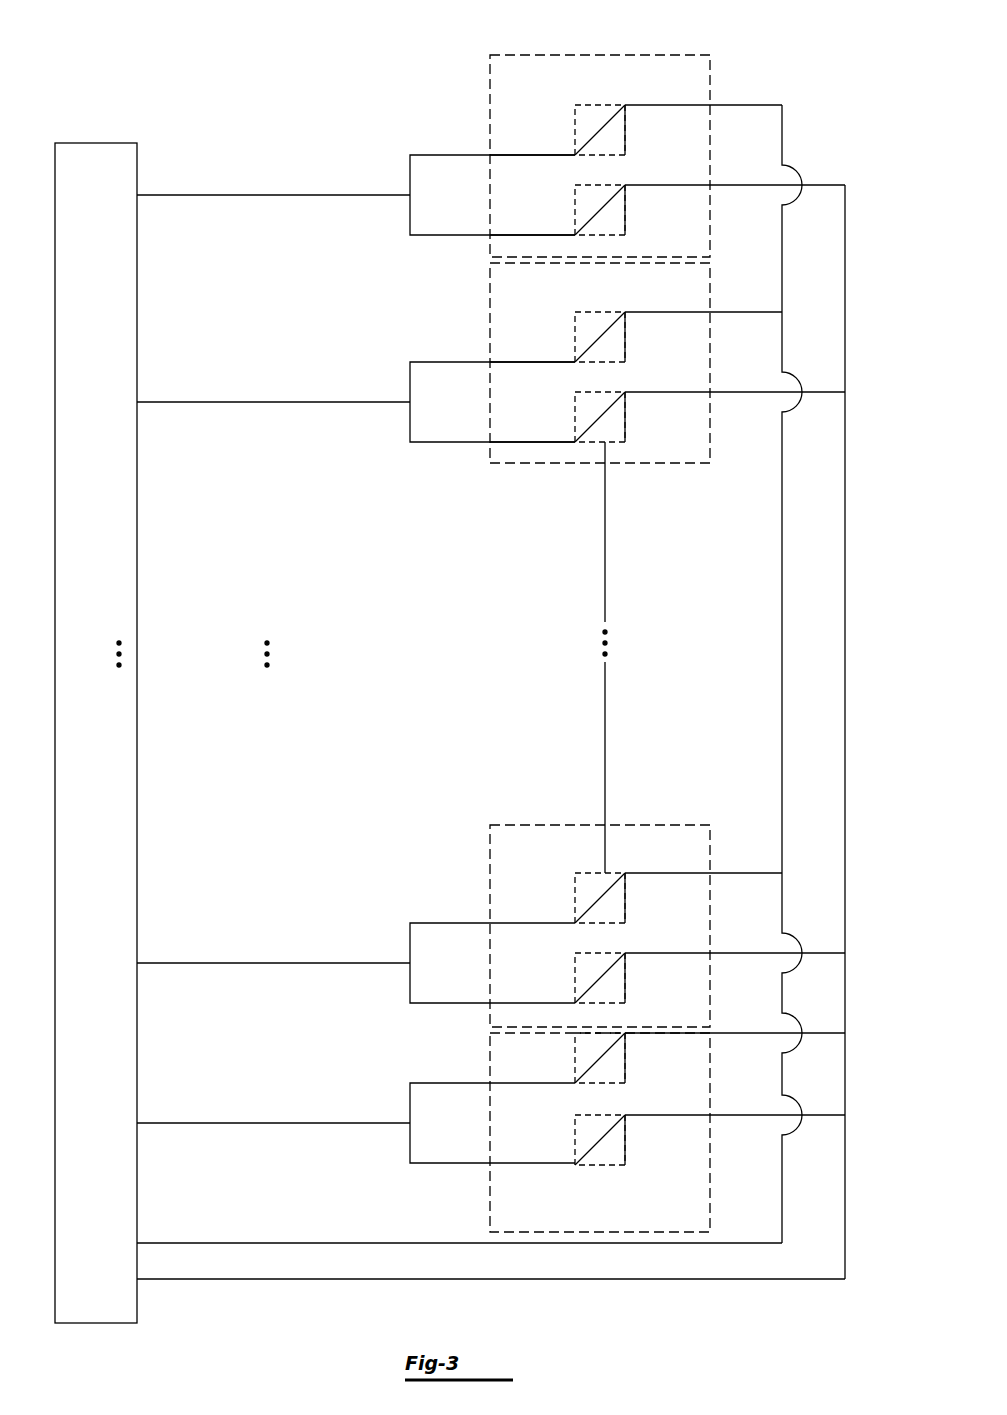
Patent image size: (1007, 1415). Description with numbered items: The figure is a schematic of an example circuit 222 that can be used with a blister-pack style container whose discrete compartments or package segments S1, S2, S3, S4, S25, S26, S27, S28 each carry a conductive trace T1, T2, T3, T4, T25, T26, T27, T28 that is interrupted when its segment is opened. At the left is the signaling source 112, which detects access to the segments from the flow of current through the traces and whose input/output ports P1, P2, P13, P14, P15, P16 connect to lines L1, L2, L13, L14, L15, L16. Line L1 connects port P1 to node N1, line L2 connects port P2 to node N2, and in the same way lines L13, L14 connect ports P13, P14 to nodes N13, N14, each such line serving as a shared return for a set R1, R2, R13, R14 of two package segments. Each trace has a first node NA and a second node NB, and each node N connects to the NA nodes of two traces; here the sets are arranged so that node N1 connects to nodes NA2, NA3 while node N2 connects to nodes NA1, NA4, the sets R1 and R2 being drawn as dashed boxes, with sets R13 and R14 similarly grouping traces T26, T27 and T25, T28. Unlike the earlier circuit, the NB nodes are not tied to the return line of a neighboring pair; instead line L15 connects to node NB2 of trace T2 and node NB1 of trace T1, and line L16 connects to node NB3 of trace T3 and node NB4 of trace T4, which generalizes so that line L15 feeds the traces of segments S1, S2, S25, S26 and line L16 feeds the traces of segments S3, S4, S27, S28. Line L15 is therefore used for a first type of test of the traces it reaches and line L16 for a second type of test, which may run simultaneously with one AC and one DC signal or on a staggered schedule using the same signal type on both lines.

The signaling source 112 is at (95, 143).
The circuit 222 is at (770, 84).
The first port P1 is at (115, 195).
The port P2 is at (115, 402).
The port P13 is at (112, 963).
The port P14 is at (112, 1123).
The port P15 is at (112, 1243).
The port P16 is at (112, 1279).
The line L1 is at (257, 195).
The line L2 is at (257, 402).
The line L13 is at (257, 963).
The line L14 is at (257, 1123).
The line L15 is at (337, 1243).
The line L16 is at (257, 1279).
The node N1 is at (410, 195).
The node N2 is at (410, 402).
The node N13 is at (410, 963).
The node N14 is at (410, 1123).
The set of two package segments R1 is at (552, 55).
The set of two package segments R2 is at (552, 463).
The set of two package segments R13 is at (535, 825).
The set of two package segments R14 is at (538, 1232).
The trace T1 is at (600, 335).
The trace T2 is at (600, 128).
The trace T3 is at (600, 208).
The trace T4 is at (600, 415).
The trace T25 is at (600, 1058).
The trace T26 is at (600, 898).
The trace T27 is at (600, 978).
The trace T28 is at (600, 1140).
The first node NA1 is at (575, 359).
The first node NA2 is at (575, 152).
The first node NA3 is at (575, 232).
The first node NA4 is at (575, 439).
The second node NB1 is at (625, 312).
The second node NB2 is at (625, 105).
The second node NB3 is at (625, 185).
The second node NB4 is at (625, 392).
The package segment S1 is at (625, 340).
The package segment S2 is at (625, 133).
The package segment S3 is at (625, 213).
The package segment S4 is at (625, 420).
The package segment S25 is at (625, 1063).
The package segment S26 is at (625, 903).
The package segment S27 is at (625, 983).
The package segment S28 is at (625, 1145).